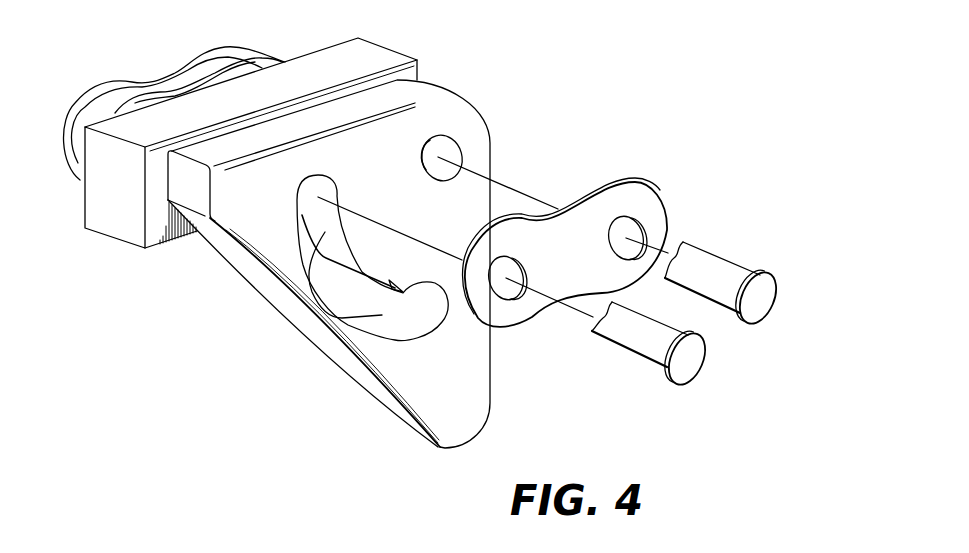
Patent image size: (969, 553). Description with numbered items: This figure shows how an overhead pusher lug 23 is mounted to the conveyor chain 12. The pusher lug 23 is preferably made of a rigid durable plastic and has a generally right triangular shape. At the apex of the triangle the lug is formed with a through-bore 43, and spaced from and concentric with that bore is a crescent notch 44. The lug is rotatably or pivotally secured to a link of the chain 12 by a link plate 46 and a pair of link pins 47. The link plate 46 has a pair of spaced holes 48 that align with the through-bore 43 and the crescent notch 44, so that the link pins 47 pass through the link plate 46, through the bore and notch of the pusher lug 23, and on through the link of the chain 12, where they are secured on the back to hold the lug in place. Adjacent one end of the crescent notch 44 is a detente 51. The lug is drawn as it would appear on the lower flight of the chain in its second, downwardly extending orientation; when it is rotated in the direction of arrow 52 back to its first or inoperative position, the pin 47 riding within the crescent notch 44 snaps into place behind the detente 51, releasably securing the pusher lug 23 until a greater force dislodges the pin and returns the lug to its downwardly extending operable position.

The conveyor chain 12 is at (277, 33).
The pusher lug 23 is at (328, 365).
The through-bore 43 is at (452, 147).
The crescent notch 44 is at (325, 232).
The link plate 46 is at (640, 200).
The link pin 47 is at (723, 272).
The spaced holes 48 is at (516, 295).
The detente 51 is at (383, 293).
The arrow 52 is at (308, 462).